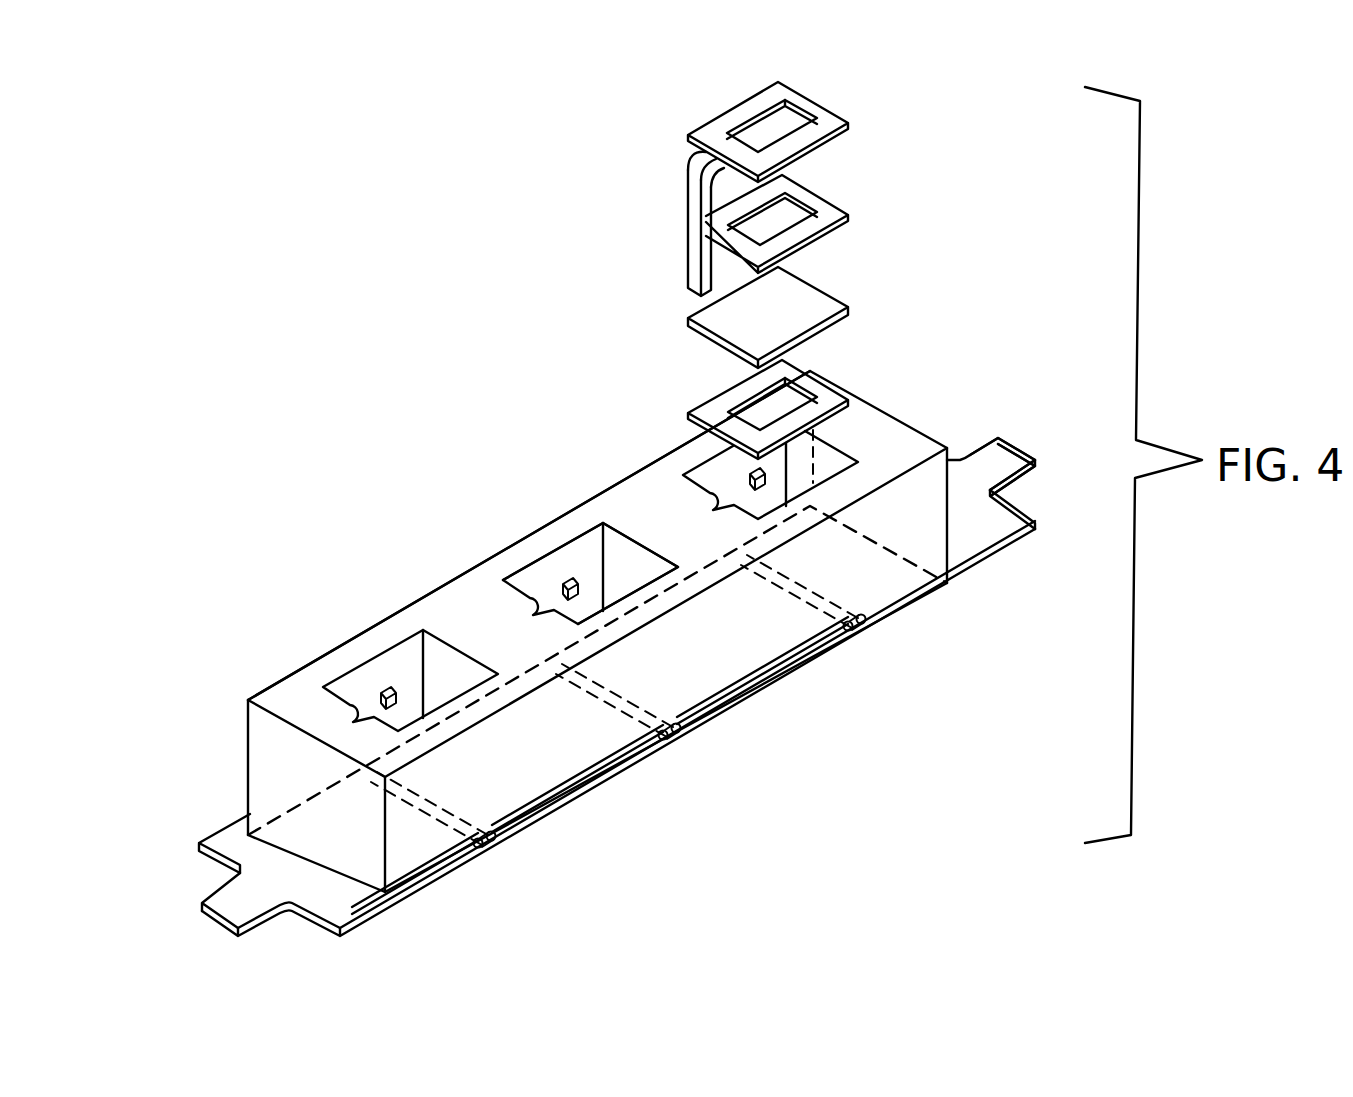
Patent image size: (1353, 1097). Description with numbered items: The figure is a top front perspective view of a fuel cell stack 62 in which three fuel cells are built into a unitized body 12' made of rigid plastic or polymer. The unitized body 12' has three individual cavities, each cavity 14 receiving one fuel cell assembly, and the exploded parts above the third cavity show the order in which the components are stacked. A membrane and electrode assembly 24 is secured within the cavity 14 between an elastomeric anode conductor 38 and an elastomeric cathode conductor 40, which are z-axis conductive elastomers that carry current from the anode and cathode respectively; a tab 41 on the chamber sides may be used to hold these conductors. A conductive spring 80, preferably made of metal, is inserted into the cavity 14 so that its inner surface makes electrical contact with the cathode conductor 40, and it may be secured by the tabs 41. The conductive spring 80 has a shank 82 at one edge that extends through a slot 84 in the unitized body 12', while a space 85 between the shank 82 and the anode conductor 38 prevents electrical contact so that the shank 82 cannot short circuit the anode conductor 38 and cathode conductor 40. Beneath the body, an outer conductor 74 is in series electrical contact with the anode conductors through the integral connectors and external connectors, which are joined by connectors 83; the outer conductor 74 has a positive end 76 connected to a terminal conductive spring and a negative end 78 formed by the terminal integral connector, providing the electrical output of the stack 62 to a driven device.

The unitized body 12' is at (566, 631).
The cavity 14 is at (584, 554).
The tab 41 is at (383, 690).
The slot 84 is at (521, 522).
The outer conductor 74 is at (959, 574).
The positive end 76 is at (1020, 458).
The negative end 78 is at (204, 915).
The strip connector 83 is at (488, 852).
The conductive spring 80 is at (816, 105).
The shank 82 is at (688, 253).
The elastomeric cathode conductor 40 is at (830, 220).
The space 85 is at (727, 186).
The membrane and electrode assembly 24 is at (832, 298).
The elastomeric anode conductor 38 is at (830, 398).
The fuel cell stack 62 is at (468, 268).